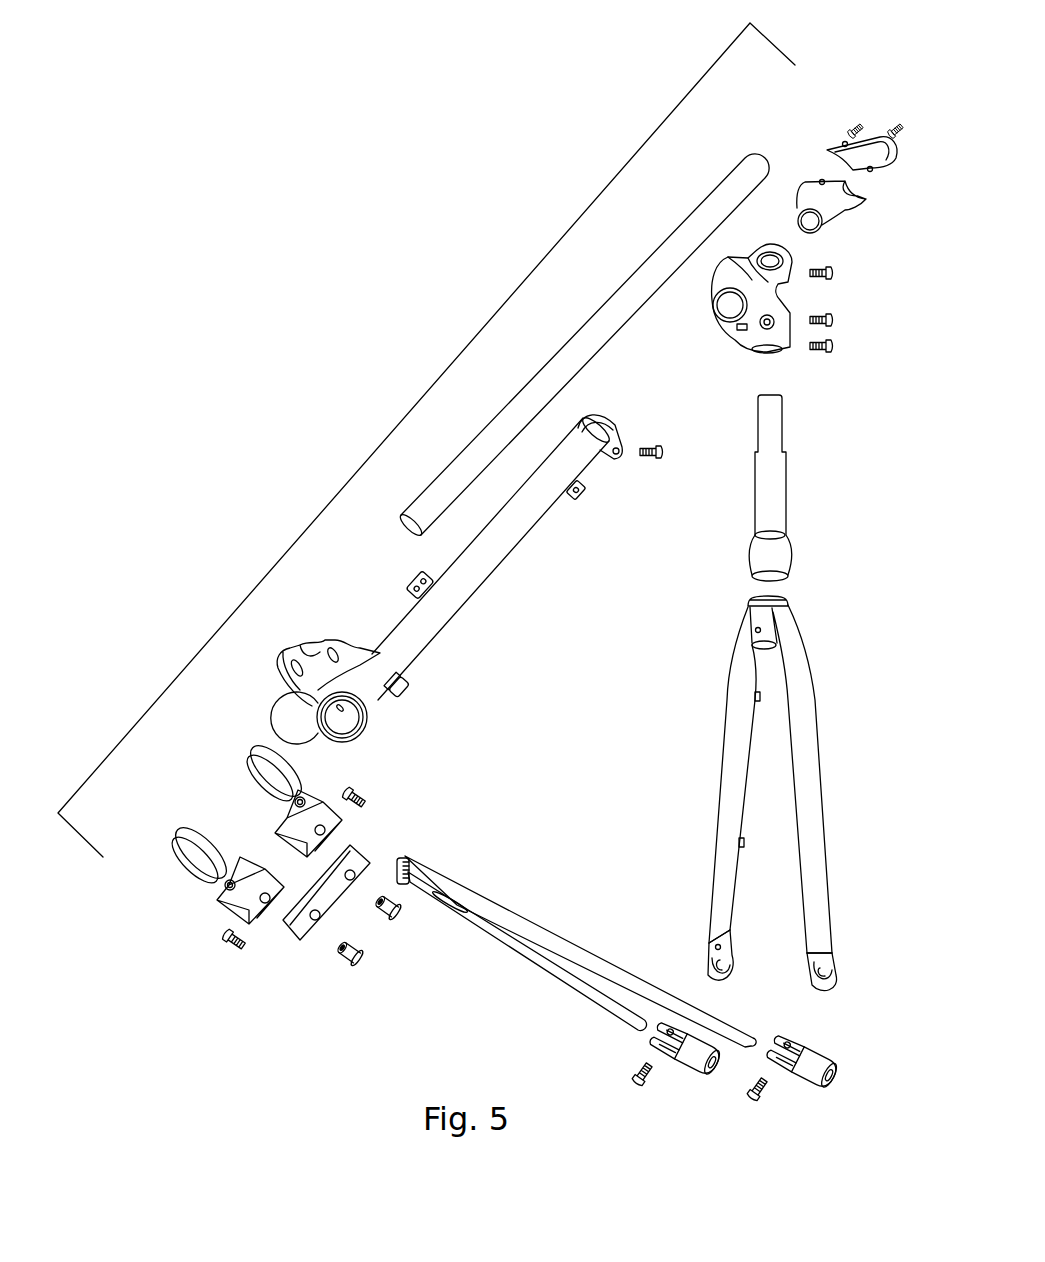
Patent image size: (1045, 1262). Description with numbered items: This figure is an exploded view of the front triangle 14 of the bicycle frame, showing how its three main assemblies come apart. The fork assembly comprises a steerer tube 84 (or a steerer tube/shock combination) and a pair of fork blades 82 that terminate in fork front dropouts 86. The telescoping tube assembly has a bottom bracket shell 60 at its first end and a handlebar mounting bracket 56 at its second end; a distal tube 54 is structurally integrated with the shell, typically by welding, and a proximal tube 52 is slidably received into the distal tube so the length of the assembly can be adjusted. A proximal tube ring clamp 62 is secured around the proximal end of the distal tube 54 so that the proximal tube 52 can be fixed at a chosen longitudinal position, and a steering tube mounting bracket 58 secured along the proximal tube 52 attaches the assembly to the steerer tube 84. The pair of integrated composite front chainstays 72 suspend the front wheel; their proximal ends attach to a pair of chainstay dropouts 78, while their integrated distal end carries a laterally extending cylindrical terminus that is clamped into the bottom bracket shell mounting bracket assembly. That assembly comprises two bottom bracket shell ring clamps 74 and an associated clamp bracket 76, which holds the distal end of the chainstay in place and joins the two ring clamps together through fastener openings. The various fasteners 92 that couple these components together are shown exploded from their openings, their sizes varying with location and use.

The front triangle 14 is at (489, 74).
The proximal tube 52 is at (614, 307).
The distal tube 54 is at (475, 572).
The handlebar mounting bracket 56 is at (800, 200).
The steering tube mounting bracket 58 is at (745, 262).
The bottom bracket shell 60 is at (302, 720).
The proximal tube ring clamp 62 is at (588, 445).
The front chainstays 72 is at (553, 942).
The bottom bracket shell ring clamps 74 is at (262, 750).
The clamp bracket 76 is at (330, 903).
The chainstay dropouts 78 is at (815, 1060).
The fork blades 82 is at (802, 707).
The steerer tube 84 is at (769, 492).
The fork front dropouts 86 is at (828, 972).
The fasteners 92 is at (898, 128).